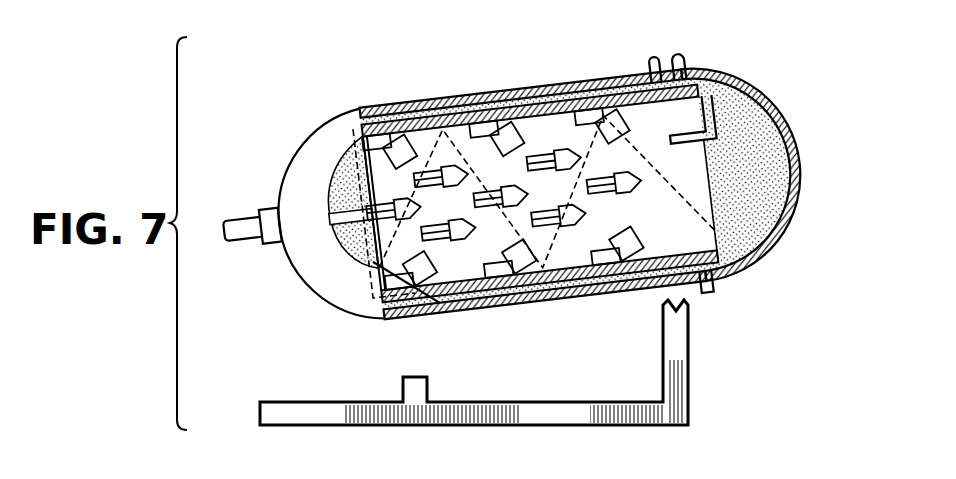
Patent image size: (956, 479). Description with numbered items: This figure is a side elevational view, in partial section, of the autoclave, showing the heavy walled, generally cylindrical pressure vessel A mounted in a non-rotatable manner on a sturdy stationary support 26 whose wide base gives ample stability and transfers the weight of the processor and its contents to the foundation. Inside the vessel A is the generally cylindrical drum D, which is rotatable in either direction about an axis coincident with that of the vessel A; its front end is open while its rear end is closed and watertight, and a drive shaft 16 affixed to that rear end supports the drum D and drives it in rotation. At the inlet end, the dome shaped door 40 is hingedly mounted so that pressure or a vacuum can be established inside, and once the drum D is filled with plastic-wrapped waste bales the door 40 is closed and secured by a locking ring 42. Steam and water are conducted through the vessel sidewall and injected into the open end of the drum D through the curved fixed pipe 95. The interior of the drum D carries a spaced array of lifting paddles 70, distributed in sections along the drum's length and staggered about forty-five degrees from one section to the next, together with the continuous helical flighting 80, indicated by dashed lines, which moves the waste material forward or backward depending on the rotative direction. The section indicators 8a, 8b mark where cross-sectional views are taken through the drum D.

The drive shaft 16 is at (240, 218).
The stationary support 26 is at (688, 390).
The dome shaped door 40 is at (801, 165).
The locking ring 42 is at (689, 63).
The lifting paddles 70 is at (360, 111).
The helical flighting 80 is at (703, 224).
The curved fixed pipe 95 is at (742, 88).
The section line 8a is at (413, 95).
The section line 8b is at (463, 90).
The pressure vessel A is at (497, 90).
The drum D is at (538, 87).